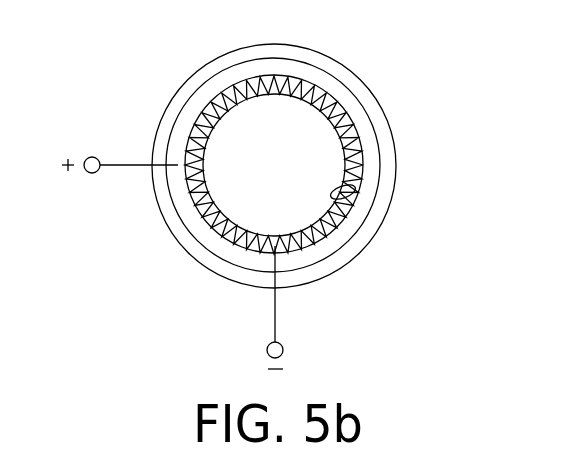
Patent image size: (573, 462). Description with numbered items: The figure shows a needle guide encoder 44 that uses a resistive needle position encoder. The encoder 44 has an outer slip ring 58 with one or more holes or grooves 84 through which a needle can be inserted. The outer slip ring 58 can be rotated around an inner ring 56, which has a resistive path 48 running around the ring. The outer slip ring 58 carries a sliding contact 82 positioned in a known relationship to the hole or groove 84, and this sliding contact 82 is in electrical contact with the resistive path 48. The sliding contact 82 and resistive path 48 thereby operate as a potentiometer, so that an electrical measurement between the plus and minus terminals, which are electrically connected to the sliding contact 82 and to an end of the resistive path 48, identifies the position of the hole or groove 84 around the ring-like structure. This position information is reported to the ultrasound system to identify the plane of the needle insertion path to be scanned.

The encoder 44 is at (178, 62).
The outer slip ring 58 is at (385, 106).
The inner ring 56 is at (382, 165).
The resistive path 48 is at (352, 196).
The sliding contact 82 is at (178, 145).
The hole or groove 84 is at (156, 154).